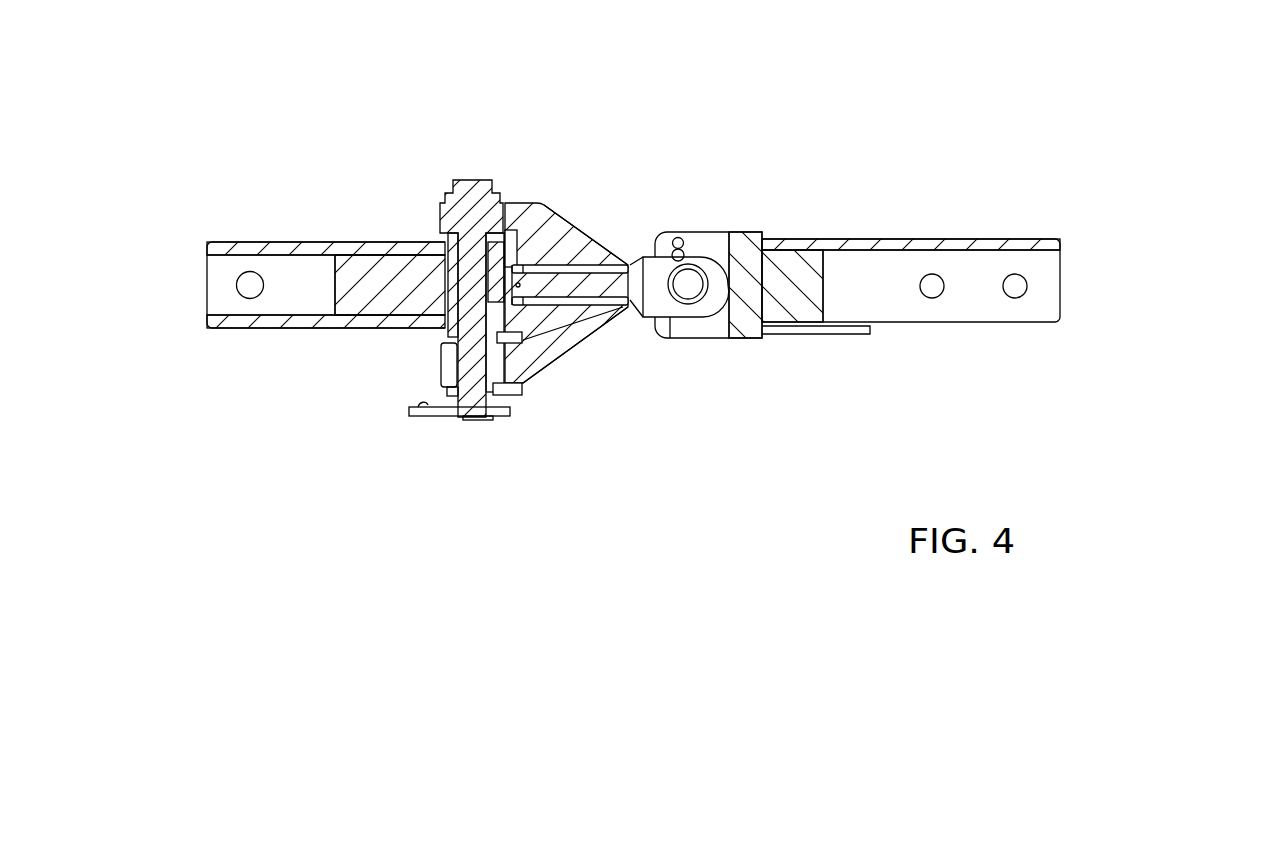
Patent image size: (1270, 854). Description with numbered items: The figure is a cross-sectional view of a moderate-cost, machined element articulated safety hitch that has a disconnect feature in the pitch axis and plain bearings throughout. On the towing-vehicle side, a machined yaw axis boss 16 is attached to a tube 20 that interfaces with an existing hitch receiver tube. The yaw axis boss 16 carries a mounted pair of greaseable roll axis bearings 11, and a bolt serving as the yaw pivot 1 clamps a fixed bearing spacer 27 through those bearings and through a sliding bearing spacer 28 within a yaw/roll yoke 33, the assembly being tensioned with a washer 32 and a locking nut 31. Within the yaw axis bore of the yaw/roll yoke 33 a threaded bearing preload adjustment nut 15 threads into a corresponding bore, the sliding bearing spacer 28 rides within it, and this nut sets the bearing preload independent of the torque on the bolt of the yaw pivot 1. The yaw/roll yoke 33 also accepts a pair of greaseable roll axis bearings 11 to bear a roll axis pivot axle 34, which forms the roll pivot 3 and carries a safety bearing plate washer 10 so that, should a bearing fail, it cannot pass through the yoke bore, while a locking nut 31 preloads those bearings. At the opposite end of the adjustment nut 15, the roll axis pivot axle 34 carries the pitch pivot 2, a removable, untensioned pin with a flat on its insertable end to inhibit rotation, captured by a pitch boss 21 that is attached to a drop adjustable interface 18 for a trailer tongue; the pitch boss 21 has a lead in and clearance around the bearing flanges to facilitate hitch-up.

The yaw pivot 1 is at (470, 178).
The pitch pivot 2 is at (662, 304).
The roll pivot 3 is at (585, 255).
The bearing plate washer 10 is at (545, 262).
The roll axis bearings 11 is at (436, 258).
The threaded bearing preload adjustment nut 15 is at (513, 362).
The yaw axis boss 16 is at (386, 281).
The drop adjustable interface 18 is at (1062, 273).
The tube 20 is at (272, 243).
The pitch boss 21 is at (717, 343).
The fixed bearing spacer 27 is at (440, 217).
The sliding bearing spacer 28 is at (438, 343).
The locking nut 31 is at (470, 420).
The washer 32 is at (508, 398).
The yaw/roll yoke 33 is at (605, 343).
The roll axis pivot axle 34 is at (645, 318).